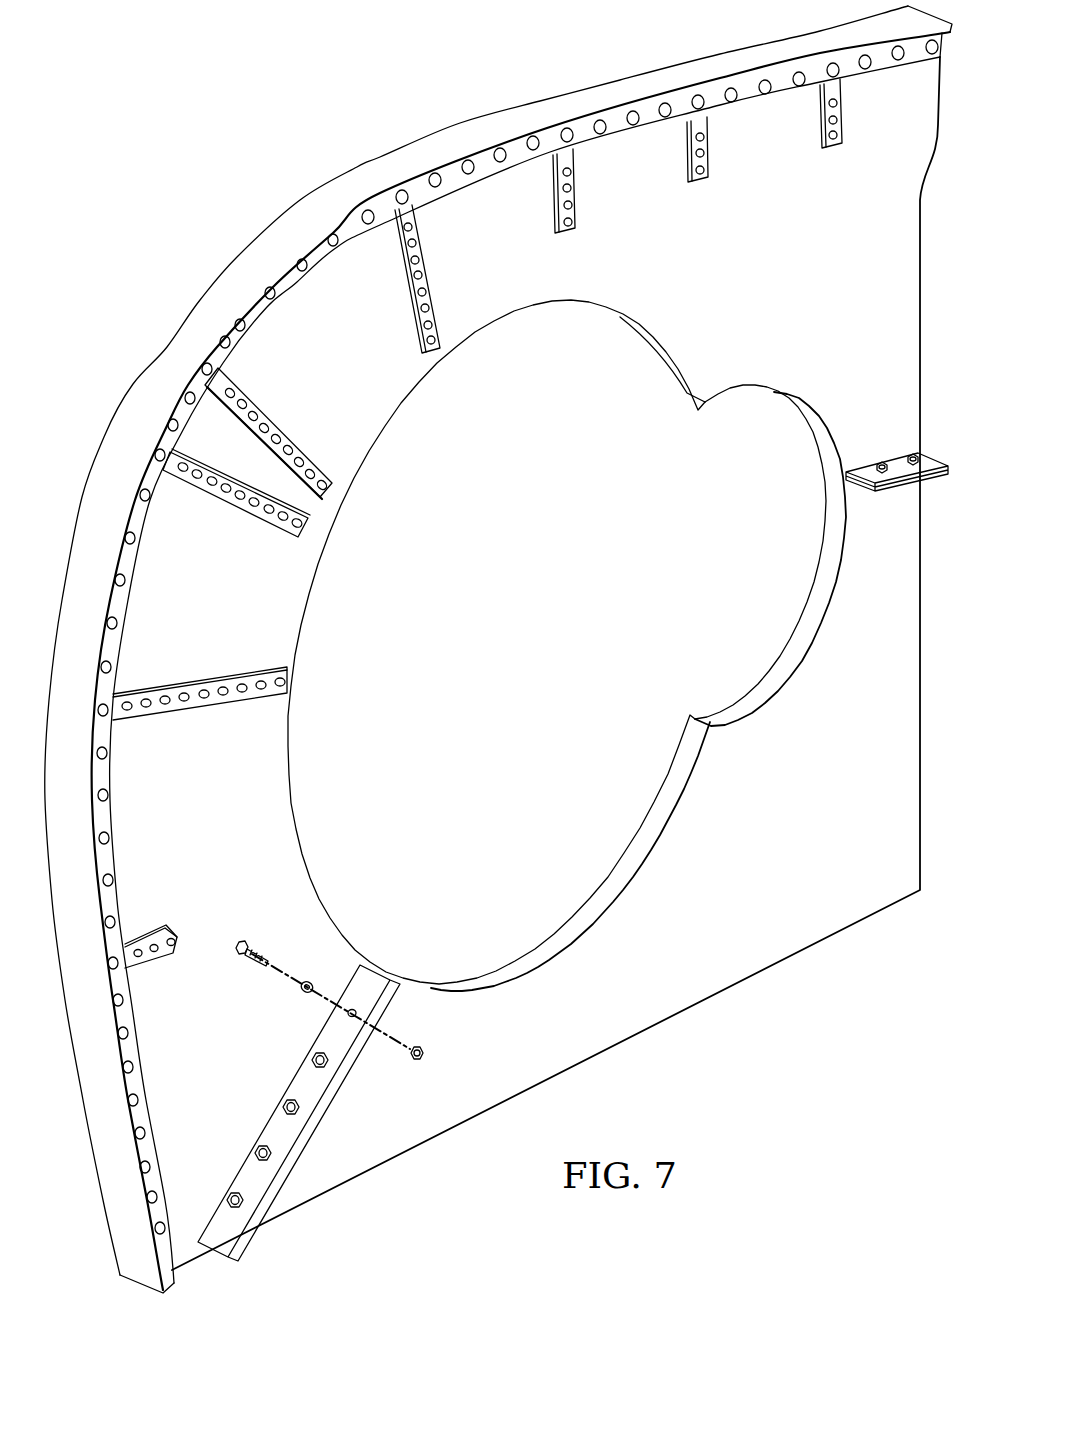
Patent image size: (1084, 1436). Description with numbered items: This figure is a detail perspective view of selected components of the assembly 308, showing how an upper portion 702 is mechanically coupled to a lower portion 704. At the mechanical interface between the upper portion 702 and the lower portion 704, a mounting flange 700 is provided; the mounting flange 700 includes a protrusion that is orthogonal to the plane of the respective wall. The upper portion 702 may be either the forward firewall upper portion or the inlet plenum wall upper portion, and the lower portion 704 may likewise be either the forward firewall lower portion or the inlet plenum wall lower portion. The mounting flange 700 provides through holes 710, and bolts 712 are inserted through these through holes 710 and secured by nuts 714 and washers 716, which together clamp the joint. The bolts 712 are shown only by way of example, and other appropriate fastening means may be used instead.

The bulkhead frame assembly 308 is at (302, 63).
The upper portion 702 is at (268, 227).
The lower portion 704 is at (658, 1024).
The mounting flange 700 is at (874, 436).
The through holes 710 is at (350, 1013).
The bolts 712 is at (238, 942).
The nuts 714 is at (423, 1058).
The washers 716 is at (299, 989).